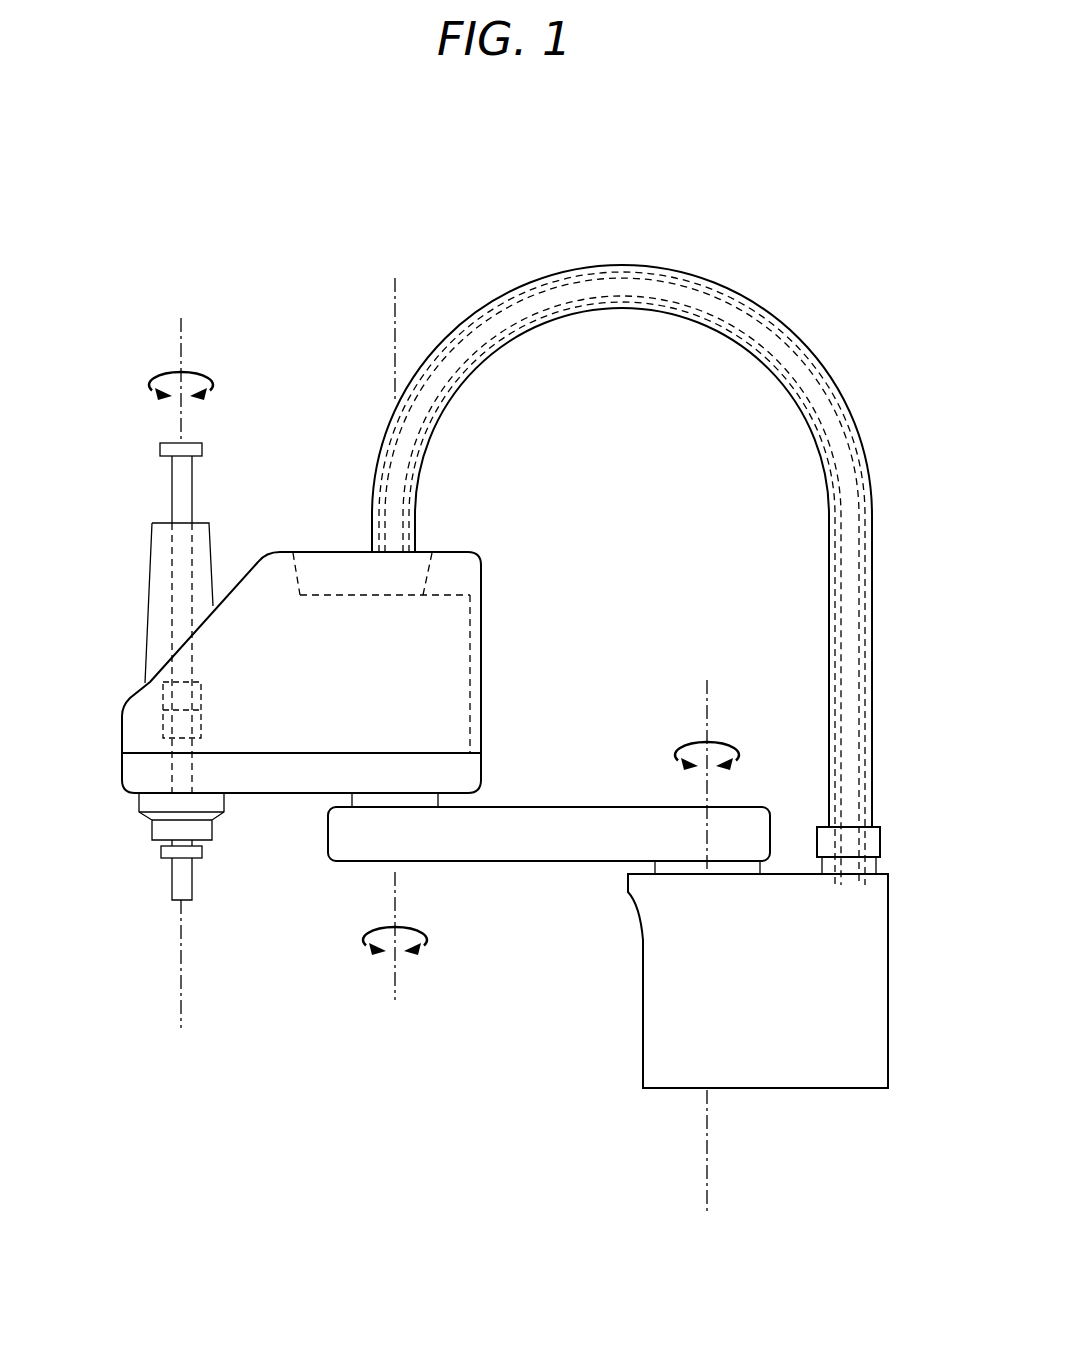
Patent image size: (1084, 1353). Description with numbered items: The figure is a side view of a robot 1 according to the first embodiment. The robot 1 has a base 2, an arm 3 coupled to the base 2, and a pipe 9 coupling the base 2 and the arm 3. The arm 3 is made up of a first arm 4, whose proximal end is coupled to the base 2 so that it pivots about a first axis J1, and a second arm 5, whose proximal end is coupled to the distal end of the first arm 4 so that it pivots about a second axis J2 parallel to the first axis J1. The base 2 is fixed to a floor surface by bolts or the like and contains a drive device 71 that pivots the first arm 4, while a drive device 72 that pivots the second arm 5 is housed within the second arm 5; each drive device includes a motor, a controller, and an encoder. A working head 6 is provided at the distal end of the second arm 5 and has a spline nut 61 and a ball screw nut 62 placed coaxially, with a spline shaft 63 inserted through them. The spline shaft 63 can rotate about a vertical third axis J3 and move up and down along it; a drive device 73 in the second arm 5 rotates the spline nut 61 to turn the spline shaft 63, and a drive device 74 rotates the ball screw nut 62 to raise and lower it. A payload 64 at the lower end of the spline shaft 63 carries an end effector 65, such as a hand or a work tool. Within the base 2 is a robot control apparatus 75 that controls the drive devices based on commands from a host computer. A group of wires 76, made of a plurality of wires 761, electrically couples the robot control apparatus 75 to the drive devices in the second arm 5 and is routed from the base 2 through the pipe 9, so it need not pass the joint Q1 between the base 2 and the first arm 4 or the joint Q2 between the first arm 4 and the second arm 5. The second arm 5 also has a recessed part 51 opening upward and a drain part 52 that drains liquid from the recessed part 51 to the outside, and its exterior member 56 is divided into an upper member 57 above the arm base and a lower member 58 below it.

The robot 1 is at (777, 182).
The base 2 is at (872, 975).
The arm 3 is at (446, 729).
The first arm 4 is at (570, 830).
The second arm 5 is at (390, 728).
The recessed part 51 is at (322, 594).
The drain part 52 is at (438, 590).
The exterior member 56 is at (275, 839).
The upper member 57 is at (252, 722).
The lower member 58 is at (300, 770).
The working head 6 is at (138, 676).
The spline nut 61 is at (165, 735).
The ball screw nut 62 is at (165, 698).
The spline shaft 63 is at (182, 490).
The payload 64 is at (175, 851).
The end effector 65 is at (180, 886).
The drive device 71 is at (710, 902).
The drive device 72 is at (432, 734).
The drive device 73 is at (432, 694).
The drive device 74 is at (432, 652).
The robot control apparatus 75 is at (788, 1025).
The group of wires 76 is at (622, 578).
The wires 761 is at (690, 404).
The pipe 9 is at (626, 575).
The first axis J1 is at (708, 696).
The second axis J2 is at (396, 977).
The third axis J3 is at (182, 329).
The joint Q1 is at (735, 870).
The joint Q2 is at (405, 808).